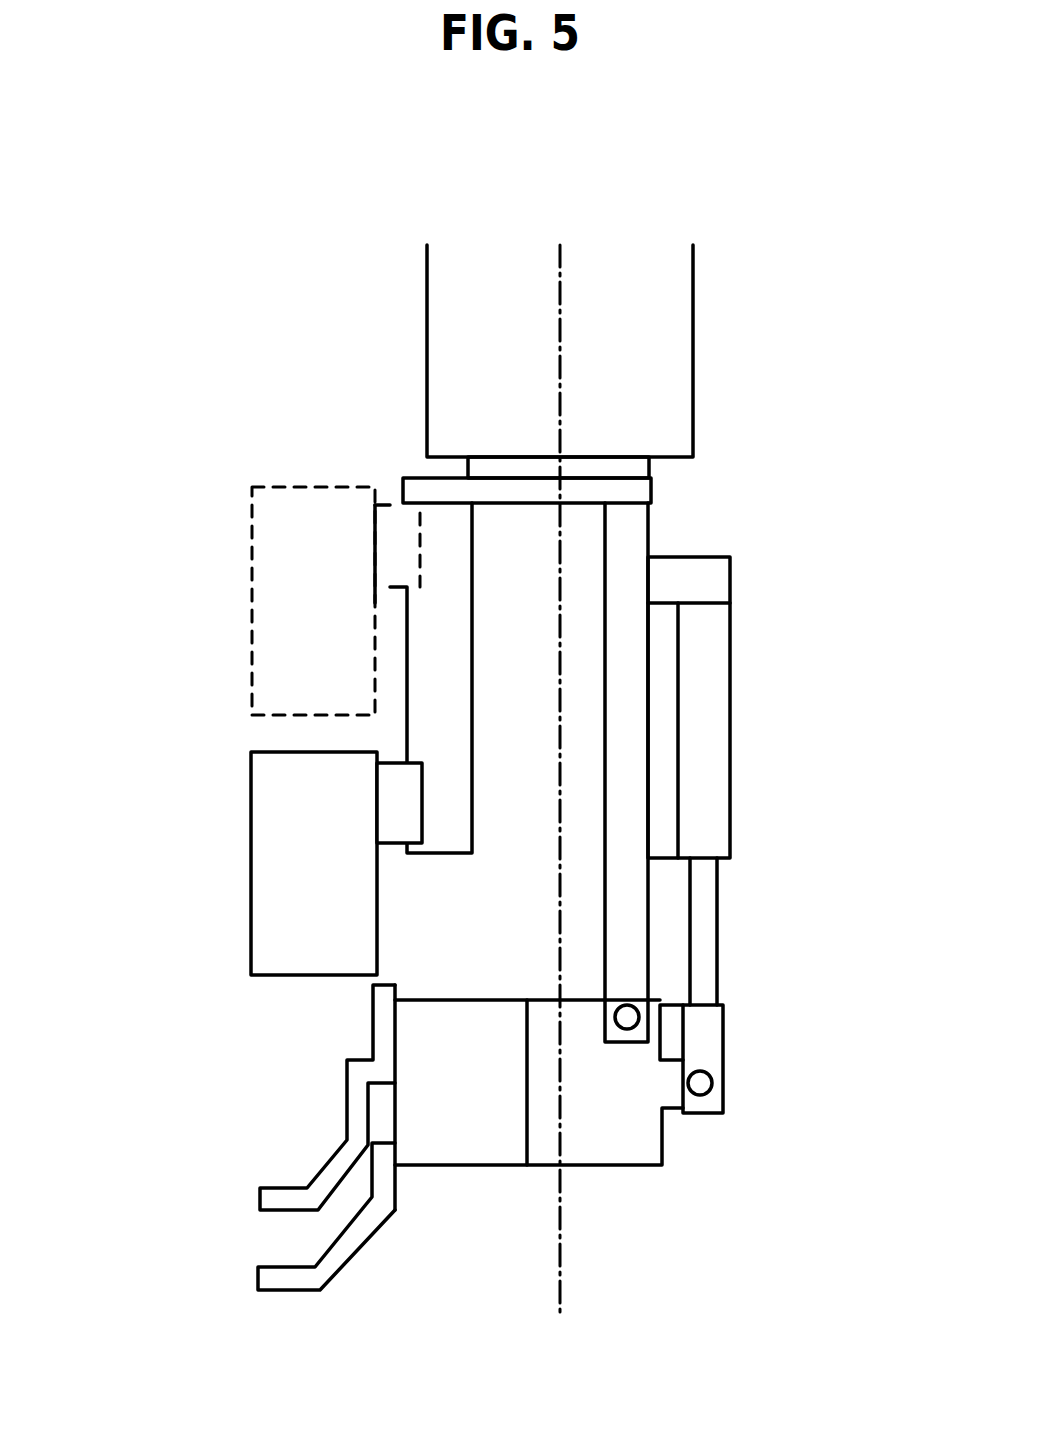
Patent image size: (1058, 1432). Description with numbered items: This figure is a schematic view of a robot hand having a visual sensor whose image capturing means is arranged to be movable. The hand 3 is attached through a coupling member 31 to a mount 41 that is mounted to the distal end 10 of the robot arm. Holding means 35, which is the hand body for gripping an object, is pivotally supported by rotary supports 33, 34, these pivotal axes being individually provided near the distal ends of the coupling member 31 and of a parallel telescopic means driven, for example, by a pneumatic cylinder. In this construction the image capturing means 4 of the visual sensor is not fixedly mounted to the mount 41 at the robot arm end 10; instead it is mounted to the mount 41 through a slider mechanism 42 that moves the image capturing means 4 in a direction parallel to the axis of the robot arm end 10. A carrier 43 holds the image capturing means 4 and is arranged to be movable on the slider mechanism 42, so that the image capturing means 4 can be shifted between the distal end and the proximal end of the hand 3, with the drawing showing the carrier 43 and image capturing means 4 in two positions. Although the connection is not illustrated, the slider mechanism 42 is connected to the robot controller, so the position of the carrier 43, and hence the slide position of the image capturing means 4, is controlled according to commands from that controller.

The hand 3 is at (757, 786).
The image capturing means 4 is at (253, 643).
The distal end of the robot arm 10 is at (693, 267).
The coupling member 31 is at (728, 757).
The rotary support 33 is at (640, 1012).
The rotary support 34 is at (723, 1078).
The holding means 35 is at (200, 1140).
The mount 41 is at (410, 477).
The slider mechanism 42 is at (472, 762).
The carrier 43 is at (392, 845).